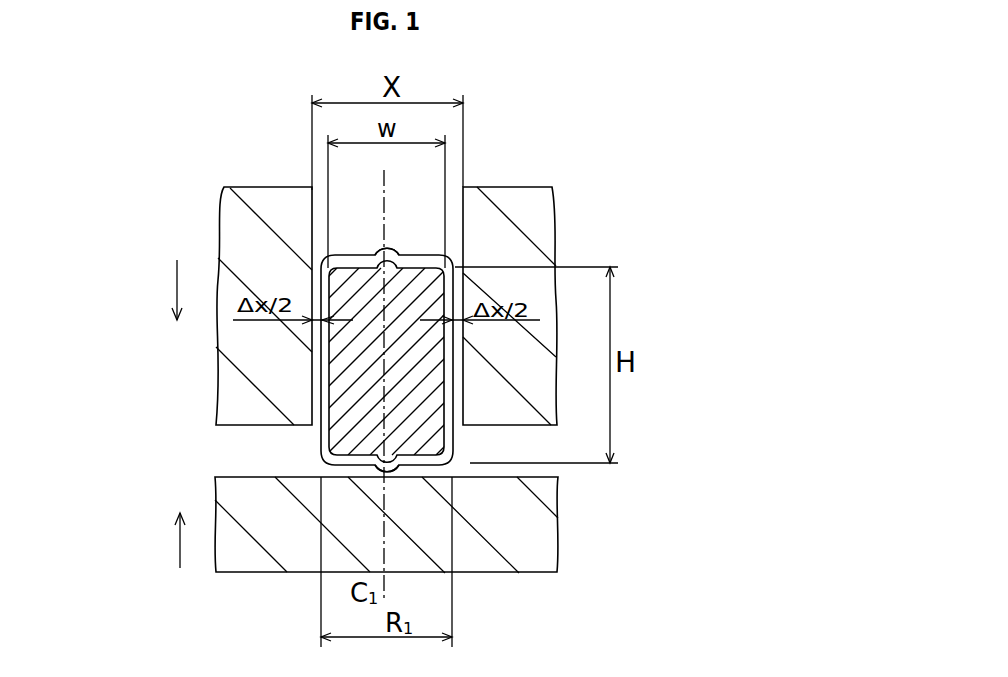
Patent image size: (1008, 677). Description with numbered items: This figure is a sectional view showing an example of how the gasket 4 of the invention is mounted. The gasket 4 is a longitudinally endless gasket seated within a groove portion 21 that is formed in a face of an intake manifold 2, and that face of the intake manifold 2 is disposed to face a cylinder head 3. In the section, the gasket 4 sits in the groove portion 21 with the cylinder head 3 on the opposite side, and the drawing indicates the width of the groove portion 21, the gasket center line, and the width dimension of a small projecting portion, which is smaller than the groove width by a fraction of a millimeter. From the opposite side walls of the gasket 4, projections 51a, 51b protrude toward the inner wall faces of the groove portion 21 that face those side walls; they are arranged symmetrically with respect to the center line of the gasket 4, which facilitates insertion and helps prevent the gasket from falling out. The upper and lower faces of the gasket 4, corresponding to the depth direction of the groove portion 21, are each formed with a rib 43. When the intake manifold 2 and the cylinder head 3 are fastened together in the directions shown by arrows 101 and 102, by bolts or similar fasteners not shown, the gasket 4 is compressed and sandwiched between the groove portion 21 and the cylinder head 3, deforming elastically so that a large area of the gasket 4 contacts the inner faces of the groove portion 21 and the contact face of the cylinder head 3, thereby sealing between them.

The intake manifold 2 is at (523, 205).
The groove portion 21 is at (310, 364).
The cylinder head 3 is at (287, 543).
The gasket 4 is at (430, 480).
The rib 43 is at (395, 258).
The projection 51a is at (447, 440).
The projection 51b is at (323, 440).
The arrow 101 is at (175, 275).
The arrow 102 is at (175, 550).